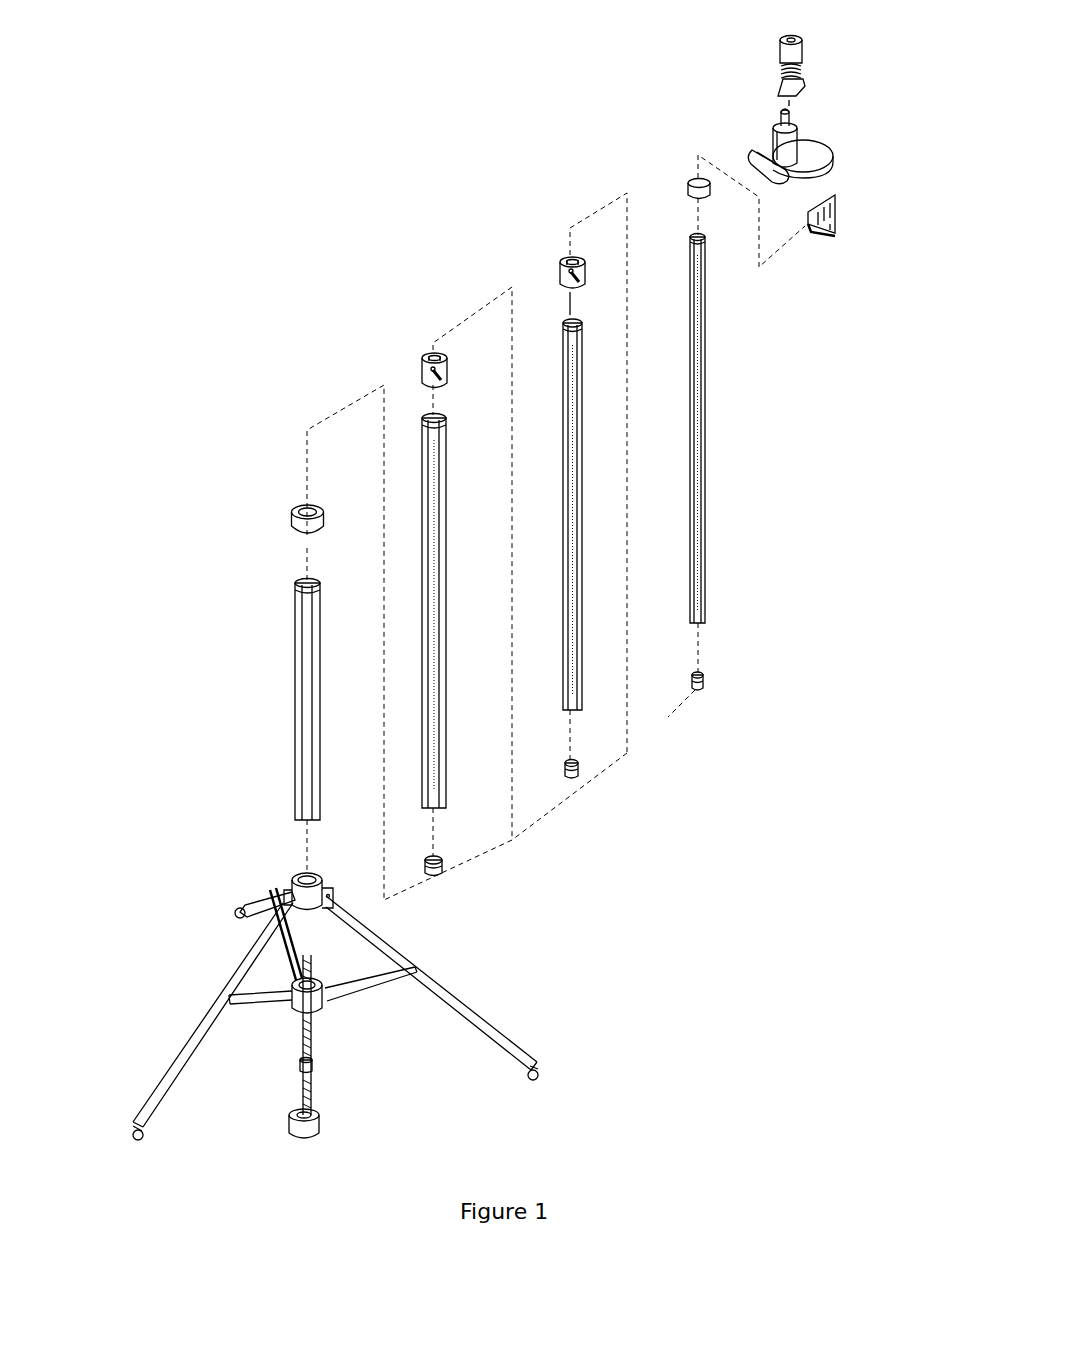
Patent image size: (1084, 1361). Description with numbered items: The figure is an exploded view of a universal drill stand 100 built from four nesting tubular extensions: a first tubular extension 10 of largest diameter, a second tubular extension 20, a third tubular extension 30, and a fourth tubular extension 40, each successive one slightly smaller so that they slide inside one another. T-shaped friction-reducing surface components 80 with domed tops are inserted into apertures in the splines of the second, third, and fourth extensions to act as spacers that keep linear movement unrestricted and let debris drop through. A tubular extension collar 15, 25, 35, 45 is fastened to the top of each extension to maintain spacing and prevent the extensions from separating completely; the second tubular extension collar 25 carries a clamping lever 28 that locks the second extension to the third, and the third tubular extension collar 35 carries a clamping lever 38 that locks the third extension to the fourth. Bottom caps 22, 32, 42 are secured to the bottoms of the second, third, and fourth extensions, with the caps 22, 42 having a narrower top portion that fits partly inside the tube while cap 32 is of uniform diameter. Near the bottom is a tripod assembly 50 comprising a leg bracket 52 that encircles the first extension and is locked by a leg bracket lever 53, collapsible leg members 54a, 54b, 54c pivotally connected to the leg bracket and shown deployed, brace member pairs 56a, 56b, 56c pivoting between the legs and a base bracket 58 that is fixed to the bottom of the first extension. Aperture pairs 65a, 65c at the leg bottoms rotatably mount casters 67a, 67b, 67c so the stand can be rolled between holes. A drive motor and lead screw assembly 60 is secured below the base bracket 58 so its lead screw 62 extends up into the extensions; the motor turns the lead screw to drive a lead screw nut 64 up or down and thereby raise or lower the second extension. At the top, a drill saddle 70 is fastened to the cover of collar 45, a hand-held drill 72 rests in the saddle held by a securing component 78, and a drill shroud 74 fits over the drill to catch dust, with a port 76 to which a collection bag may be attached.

The universal drill stand 100 is at (274, 93).
The first tubular extension 10 is at (294, 740).
The first tubular extension collar 15 is at (292, 515).
The second tubular extension 20 is at (444, 672).
The tubular extension bottom cap 22 is at (442, 860).
The second tubular extension collar 25 is at (422, 362).
The clamping lever 28 is at (447, 380).
The third tubular extension 30 is at (585, 553).
The tubular extension bottom cap 32 is at (578, 765).
The third tubular extension collar 35 is at (560, 268).
The clamping lever 38 is at (587, 285).
The fourth tubular extension 40 is at (701, 523).
The tubular extension bottom cap 42 is at (703, 680).
The fourth tubular extension collar 45 is at (688, 183).
The friction-reducing surface component 80 is at (443, 778).
The drill shroud 74 is at (803, 50).
The port 76 is at (795, 100).
The hand-held drill 72 is at (798, 123).
The securing component 78 is at (833, 158).
The drill saddle 70 is at (837, 197).
The tripod assembly 50 is at (467, 982).
The leg bracket 52 is at (300, 877).
The leg bracket lever 53 is at (325, 913).
The collapsible leg member 54a is at (172, 1055).
The collapsible leg member 54b is at (257, 888).
The collapsible leg member 54c is at (502, 1025).
The brace member pair 56a is at (272, 1000).
The brace member pair 56b is at (293, 897).
The brace member pair 56c is at (358, 993).
The base bracket 58 is at (313, 1007).
The drive motor and lead screw assembly 60 is at (319, 1123).
The lead screw 62 is at (300, 1090).
The lead screw nut 64 is at (308, 1062).
The aperture pair 65a is at (147, 1120).
The aperture pair 65c is at (530, 1074).
The caster 67a is at (136, 1134).
The caster 67b is at (233, 905).
The caster 67c is at (540, 1072).